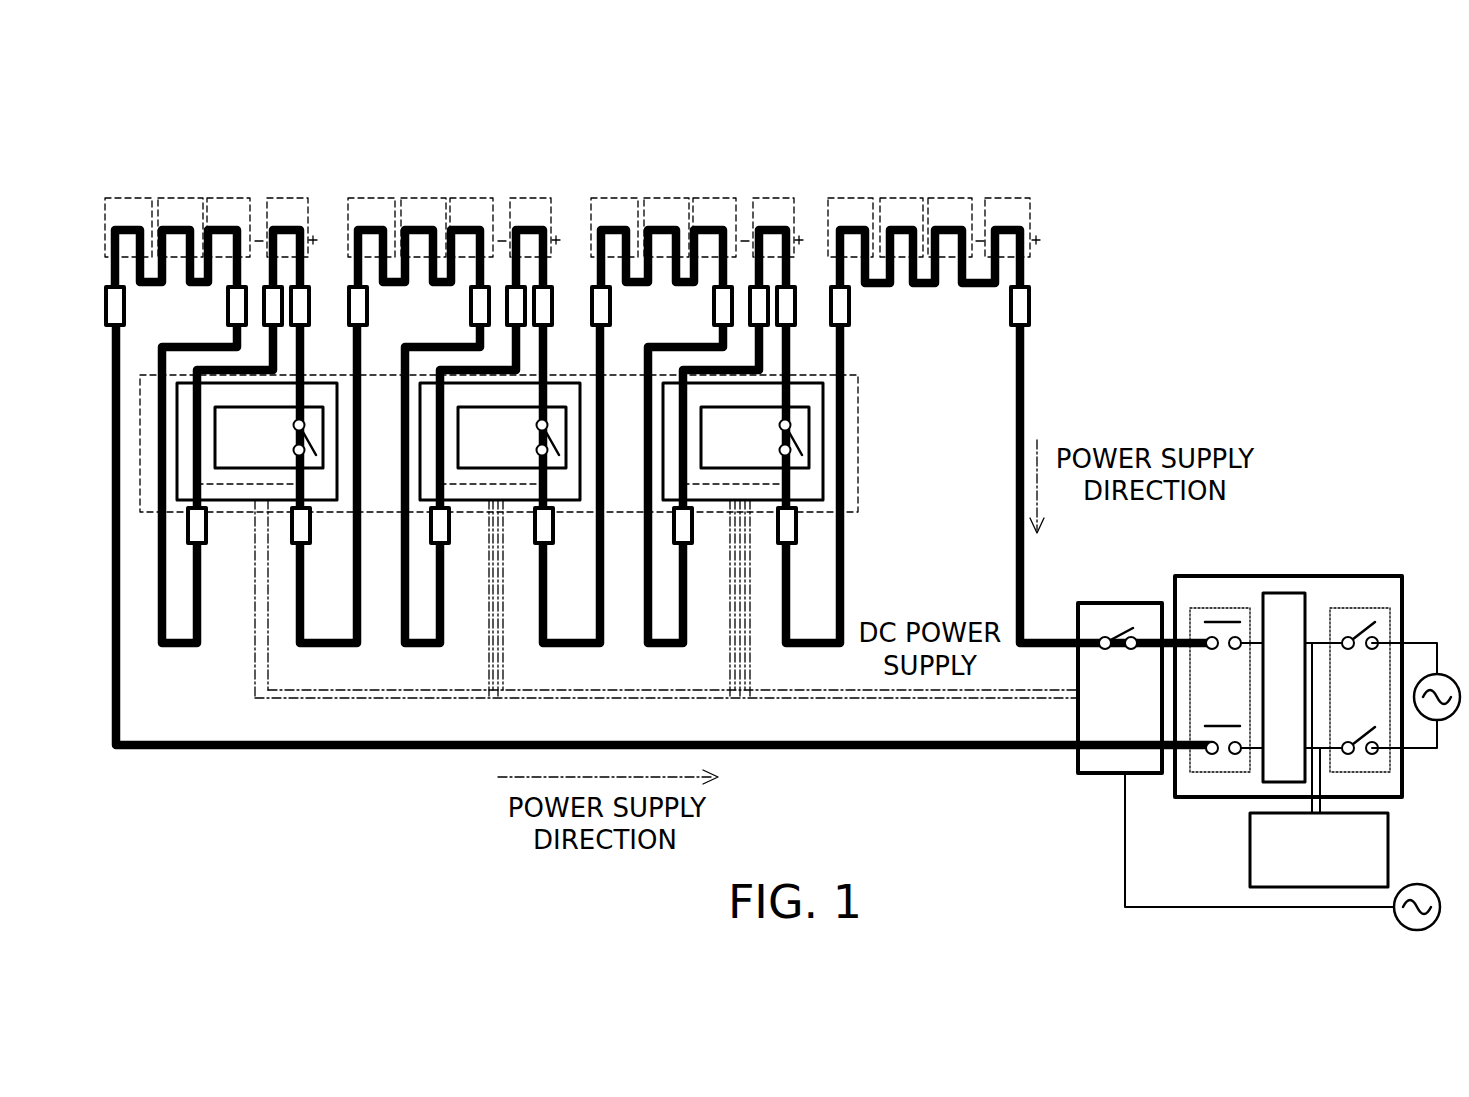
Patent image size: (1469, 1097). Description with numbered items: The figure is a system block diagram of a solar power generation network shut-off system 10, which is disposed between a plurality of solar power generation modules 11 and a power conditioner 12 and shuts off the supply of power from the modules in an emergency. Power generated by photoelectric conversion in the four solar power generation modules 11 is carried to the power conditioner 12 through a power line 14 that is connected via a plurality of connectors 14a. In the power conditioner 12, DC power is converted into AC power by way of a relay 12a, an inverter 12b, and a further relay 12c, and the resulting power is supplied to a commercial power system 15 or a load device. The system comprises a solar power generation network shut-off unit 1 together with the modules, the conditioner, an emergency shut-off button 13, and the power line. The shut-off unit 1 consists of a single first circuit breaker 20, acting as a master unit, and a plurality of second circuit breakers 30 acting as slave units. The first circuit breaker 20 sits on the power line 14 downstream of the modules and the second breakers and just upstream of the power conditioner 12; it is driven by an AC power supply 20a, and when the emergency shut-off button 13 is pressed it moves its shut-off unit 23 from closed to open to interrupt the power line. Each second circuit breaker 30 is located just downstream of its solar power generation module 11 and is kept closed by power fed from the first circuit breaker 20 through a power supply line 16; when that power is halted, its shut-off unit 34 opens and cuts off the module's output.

The solar power generation network shut-off unit 1 is at (862, 445).
The solar power generation network shut-off system 10 is at (1222, 168).
The solar power generation module 11 is at (572, 176).
The power conditioner 12 is at (1318, 574).
The relay 12a is at (1220, 606).
The inverter 12b is at (1282, 592).
The relay 12c is at (1363, 606).
The emergency shut-off button 13 is at (1250, 842).
The power line 14 is at (181, 650).
The connector 14a is at (298, 303).
The commercial power system 15 is at (1445, 673).
The power supply line 16 is at (866, 702).
The first circuit breaker 20 is at (1118, 602).
The AC power supply 20a is at (1420, 883).
The shut-off unit 23 is at (1105, 637).
The second circuit breaker 30 is at (275, 503).
The shut-off unit 34 is at (307, 441).